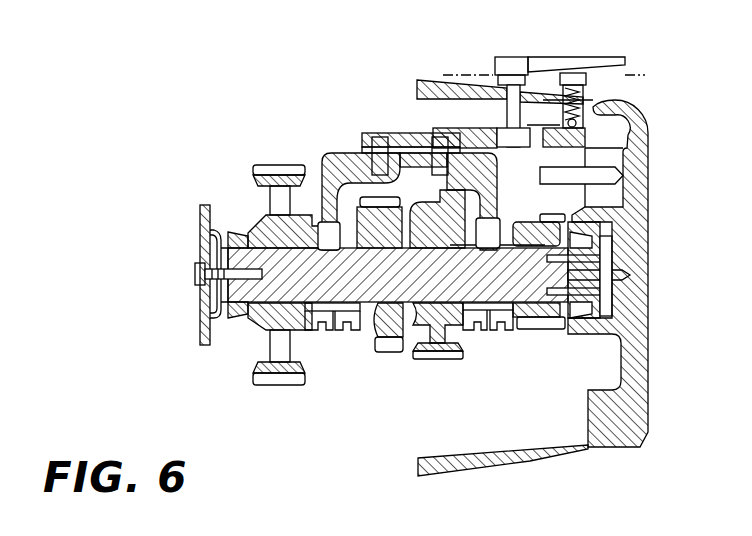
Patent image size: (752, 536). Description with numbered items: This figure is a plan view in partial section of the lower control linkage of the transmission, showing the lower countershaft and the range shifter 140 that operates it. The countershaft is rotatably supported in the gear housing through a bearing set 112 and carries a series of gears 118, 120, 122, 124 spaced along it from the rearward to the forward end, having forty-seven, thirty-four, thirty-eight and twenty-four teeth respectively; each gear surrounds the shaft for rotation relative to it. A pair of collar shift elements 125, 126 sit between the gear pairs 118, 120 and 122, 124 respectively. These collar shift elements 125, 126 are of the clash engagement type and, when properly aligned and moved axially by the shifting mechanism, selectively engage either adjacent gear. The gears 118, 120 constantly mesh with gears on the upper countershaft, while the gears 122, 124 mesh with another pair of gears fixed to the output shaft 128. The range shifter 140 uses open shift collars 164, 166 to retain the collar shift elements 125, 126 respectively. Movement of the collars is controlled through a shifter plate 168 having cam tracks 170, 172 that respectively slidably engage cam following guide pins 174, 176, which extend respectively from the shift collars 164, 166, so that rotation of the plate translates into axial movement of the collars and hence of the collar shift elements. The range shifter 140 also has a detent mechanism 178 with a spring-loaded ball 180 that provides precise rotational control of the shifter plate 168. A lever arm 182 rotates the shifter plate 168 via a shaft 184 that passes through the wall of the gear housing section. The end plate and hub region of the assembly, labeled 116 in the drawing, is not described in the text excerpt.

The bearing set 112 is at (533, 288).
The end plate and hub 116 is at (228, 275).
The gear 118 is at (285, 385).
The gear 120 is at (400, 353).
The gear 122 is at (440, 358).
The gear 124 is at (540, 318).
The collar shift element 125 is at (337, 328).
The collar shift element 126 is at (489, 330).
The output shaft 128 is at (383, 288).
The range shifter 140 is at (427, 76).
The open shift collar 164 is at (330, 176).
The open shift collar 166 is at (500, 204).
The shifter plate 168 is at (392, 133).
The cam track 170 is at (404, 132).
The cam track 172 is at (455, 128).
The cam following guide pin 174 is at (373, 151).
The cam following guide pin 176 is at (390, 207).
The detent mechanism 178 is at (596, 104).
The spring-loaded ball 180 is at (566, 145).
The lever arm 182 is at (580, 57).
The shaft 184 is at (512, 90).